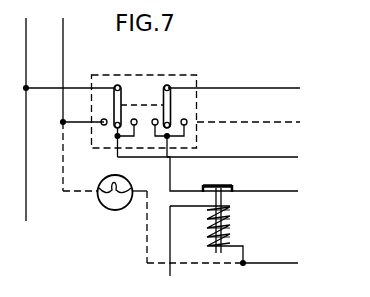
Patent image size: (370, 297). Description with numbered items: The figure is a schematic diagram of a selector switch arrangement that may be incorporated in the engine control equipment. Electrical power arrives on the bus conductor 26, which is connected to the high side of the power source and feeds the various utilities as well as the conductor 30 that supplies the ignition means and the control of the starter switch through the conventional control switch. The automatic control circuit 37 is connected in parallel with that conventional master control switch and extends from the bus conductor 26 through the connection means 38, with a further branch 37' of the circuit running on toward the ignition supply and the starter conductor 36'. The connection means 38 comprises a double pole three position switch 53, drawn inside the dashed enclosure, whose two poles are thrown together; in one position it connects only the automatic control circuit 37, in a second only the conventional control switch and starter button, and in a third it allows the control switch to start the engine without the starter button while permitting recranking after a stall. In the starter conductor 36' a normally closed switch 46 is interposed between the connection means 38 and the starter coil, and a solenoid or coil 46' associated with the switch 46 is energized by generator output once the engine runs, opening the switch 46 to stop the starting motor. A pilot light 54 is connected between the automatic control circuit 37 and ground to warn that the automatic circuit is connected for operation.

The bus conductor 26 is at (27, 189).
The control circuit 37 is at (82, 104).
The control circuit 37' is at (163, 94).
The connection means 38 is at (137, 88).
The double pole three position switch 53 is at (172, 114).
The conductor 30 is at (266, 160).
The starter conductor 36' is at (232, 216).
The pilot light 54 is at (108, 206).
The switch 46 is at (221, 209).
The solenoid or coil 46' is at (252, 236).